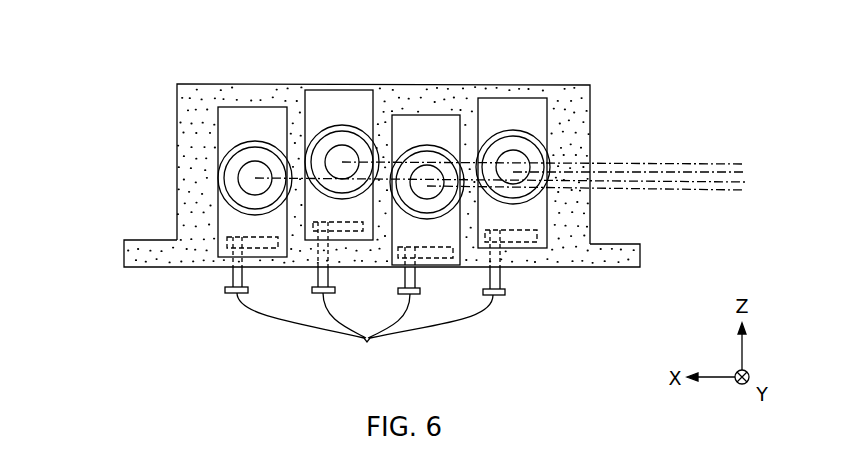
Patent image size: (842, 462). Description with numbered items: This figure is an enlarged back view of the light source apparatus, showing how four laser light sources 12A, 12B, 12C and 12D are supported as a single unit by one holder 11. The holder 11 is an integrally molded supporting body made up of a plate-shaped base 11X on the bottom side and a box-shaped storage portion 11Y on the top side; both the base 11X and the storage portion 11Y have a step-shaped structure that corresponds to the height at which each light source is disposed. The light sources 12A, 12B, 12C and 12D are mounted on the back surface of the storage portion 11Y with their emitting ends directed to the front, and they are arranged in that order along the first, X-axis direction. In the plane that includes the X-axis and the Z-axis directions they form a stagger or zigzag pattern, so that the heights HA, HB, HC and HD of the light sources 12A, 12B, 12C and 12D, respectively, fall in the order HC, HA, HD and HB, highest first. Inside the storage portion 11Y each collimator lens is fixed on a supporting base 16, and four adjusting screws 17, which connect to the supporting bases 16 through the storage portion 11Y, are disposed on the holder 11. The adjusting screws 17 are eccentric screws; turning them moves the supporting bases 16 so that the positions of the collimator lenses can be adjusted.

The holder 11 is at (334, 175).
The base 11X is at (132, 253).
The storage portion 11Y is at (183, 125).
The light source 12A is at (526, 202).
The light source 12B is at (427, 182).
The light source 12C is at (342, 162).
The light source 12D is at (255, 178).
The supporting base 16 is at (522, 256).
The adjusting screw 17 is at (365, 322).
The height of light source 12A HA is at (667, 163).
The height of light source 12B HB is at (732, 190).
The height of light source 12C HC is at (732, 163).
The height of light source 12D HD is at (667, 190).